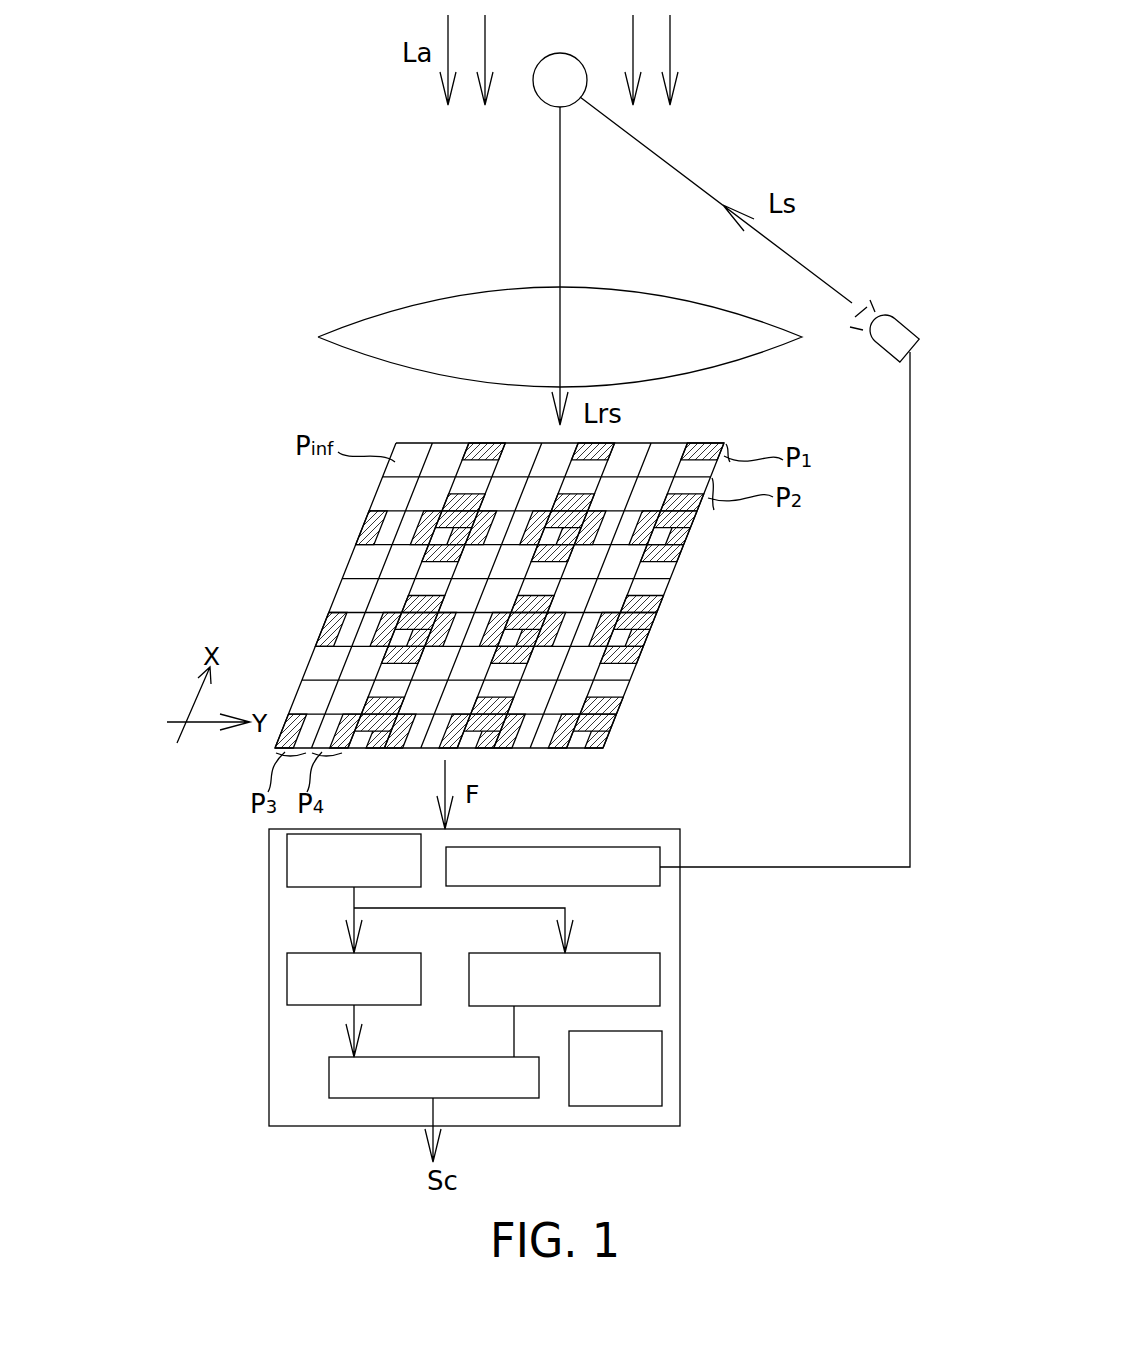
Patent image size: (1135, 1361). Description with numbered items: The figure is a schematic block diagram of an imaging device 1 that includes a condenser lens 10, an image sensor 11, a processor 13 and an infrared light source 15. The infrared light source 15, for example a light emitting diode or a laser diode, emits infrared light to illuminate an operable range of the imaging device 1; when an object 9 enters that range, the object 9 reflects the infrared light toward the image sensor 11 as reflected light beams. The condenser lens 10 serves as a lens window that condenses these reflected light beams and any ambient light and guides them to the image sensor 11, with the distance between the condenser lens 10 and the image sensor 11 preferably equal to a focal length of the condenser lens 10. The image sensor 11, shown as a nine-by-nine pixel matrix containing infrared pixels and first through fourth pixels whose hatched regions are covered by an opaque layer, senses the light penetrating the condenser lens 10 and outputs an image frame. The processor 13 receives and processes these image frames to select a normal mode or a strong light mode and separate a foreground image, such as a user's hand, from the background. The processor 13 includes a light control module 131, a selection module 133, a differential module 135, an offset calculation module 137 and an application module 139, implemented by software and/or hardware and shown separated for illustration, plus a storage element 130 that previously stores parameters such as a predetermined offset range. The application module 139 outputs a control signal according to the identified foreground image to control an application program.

The imaging device 1 is at (248, 66).
The object 9 is at (580, 57).
The condenser lens 10 is at (353, 322).
The image sensor 11 is at (668, 605).
The processor 13 is at (680, 1025).
The infrared light source 15 is at (905, 320).
The storage element 130 is at (662, 1076).
The light control module 131 is at (642, 847).
The selection module 133 is at (287, 866).
The differential module 135 is at (287, 973).
The offset calculation module 137 is at (660, 970).
The application module 139 is at (355, 1098).